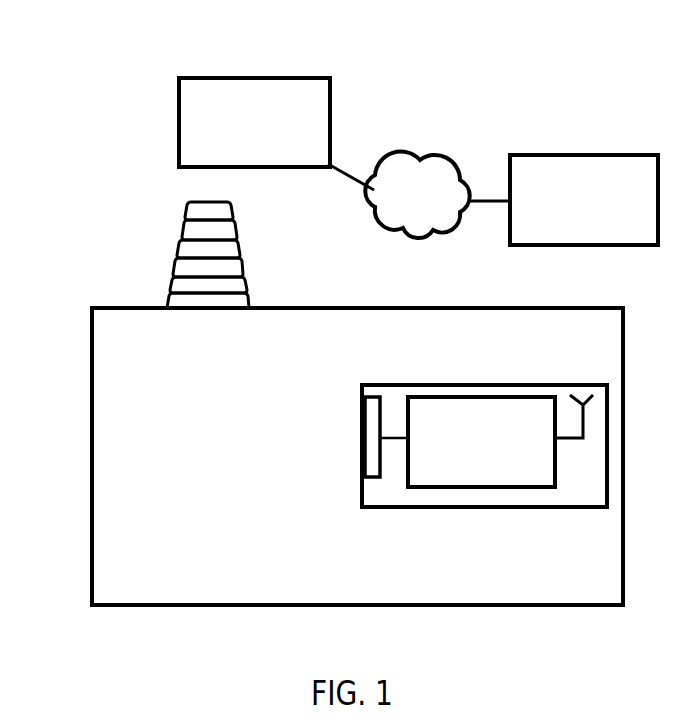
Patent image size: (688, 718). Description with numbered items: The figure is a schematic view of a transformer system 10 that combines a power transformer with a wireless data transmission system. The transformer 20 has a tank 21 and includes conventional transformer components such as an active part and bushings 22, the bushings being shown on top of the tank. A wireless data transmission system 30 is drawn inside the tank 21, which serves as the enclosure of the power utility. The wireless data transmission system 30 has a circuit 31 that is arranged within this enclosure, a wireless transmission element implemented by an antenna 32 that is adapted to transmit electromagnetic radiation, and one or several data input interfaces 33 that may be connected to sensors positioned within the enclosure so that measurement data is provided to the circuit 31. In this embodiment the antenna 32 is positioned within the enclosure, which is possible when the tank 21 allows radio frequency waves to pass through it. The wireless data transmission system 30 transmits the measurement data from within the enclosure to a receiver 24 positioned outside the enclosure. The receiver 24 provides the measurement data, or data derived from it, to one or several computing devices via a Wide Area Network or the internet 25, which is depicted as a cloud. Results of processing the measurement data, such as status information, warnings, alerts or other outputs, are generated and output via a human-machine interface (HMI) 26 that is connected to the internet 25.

The transformer system 10 is at (104, 68).
The transformer 20 is at (88, 302).
The tank 21 is at (120, 608).
The bushings 22 is at (178, 243).
The receiver 24 is at (527, 155).
The internet 25 is at (407, 152).
The human-machine interface (HMI) 26 is at (199, 77).
The wireless data transmission system 30 is at (362, 385).
The circuit 31 is at (458, 397).
The antenna 32 is at (591, 394).
The data input interface 33 is at (372, 480).